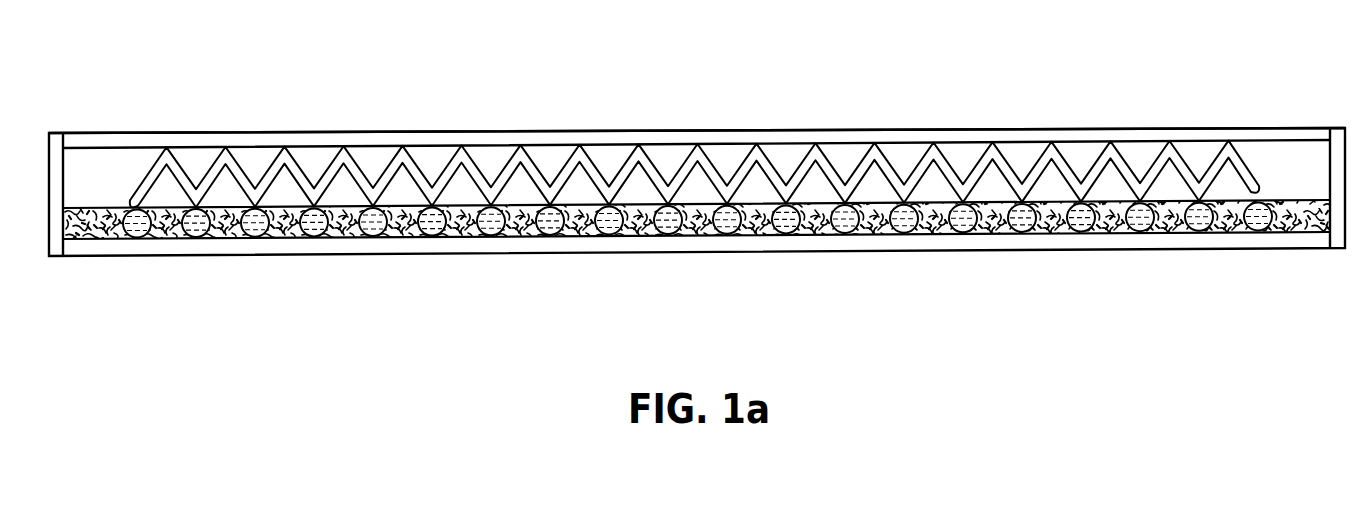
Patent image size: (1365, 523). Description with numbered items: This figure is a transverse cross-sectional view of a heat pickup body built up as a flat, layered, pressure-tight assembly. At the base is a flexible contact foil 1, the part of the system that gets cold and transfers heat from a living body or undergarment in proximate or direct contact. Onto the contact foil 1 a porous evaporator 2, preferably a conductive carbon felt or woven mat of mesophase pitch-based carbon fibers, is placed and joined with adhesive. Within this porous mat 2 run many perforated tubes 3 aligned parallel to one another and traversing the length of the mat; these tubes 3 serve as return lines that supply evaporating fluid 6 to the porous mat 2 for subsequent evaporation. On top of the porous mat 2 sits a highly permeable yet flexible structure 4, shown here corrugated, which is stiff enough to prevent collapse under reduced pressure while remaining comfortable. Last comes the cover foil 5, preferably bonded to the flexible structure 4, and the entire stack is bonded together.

The contact foil 1 is at (923, 251).
The porous evaporator 2 is at (1288, 216).
The perforated tubes 3 is at (1262, 213).
The flexible structure 4 is at (1242, 164).
The cover foil 5 is at (772, 130).
The evaporating fluid 6 is at (1268, 204).